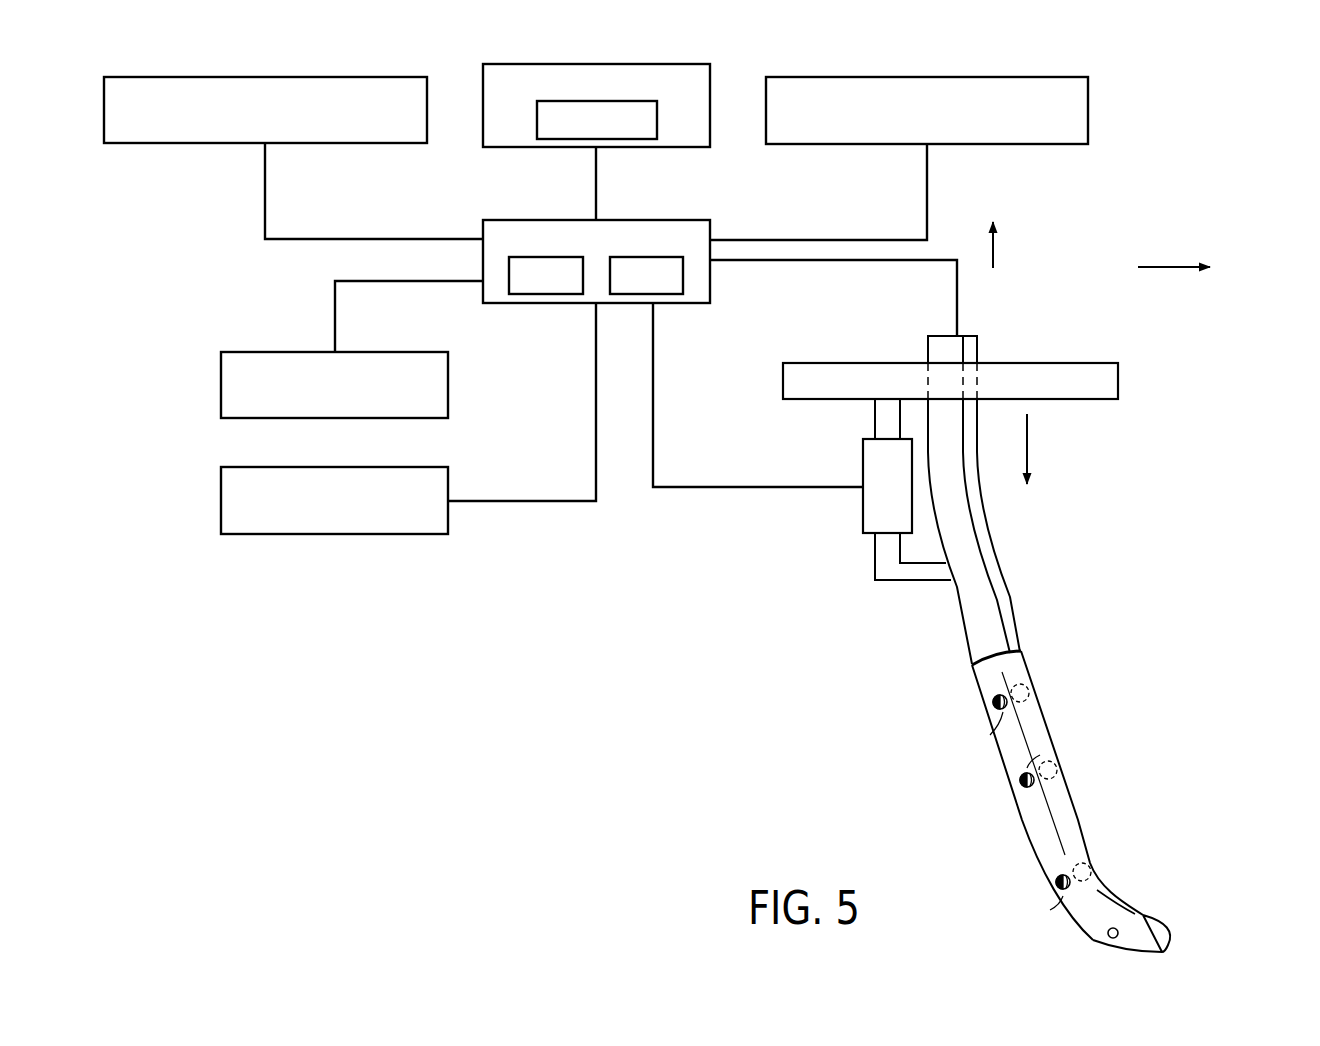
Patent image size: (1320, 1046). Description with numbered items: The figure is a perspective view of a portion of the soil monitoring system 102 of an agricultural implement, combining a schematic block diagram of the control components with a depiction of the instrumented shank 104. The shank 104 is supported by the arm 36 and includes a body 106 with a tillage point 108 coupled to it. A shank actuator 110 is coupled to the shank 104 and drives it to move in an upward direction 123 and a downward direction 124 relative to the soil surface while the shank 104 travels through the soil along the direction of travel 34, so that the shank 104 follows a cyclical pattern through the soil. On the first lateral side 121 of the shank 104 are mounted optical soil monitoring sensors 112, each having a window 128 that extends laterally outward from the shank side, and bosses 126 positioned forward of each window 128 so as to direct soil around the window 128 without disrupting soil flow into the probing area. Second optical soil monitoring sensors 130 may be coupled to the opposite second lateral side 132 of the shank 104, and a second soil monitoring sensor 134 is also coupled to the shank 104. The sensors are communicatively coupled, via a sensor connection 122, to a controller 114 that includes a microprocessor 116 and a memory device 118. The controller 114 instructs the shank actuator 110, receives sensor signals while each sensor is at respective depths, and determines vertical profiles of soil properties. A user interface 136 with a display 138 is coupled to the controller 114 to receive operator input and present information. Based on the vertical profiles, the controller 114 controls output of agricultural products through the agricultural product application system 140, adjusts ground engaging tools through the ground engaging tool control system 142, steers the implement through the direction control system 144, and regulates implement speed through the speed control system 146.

The ground engaging tool control system 142 is at (265, 76).
The user interface 136 is at (712, 103).
The display 138 is at (657, 118).
The agricultural product application system 140 is at (927, 77).
The controller 114 is at (541, 218).
The microprocessor 116 is at (547, 296).
The memory device 118 is at (670, 296).
The speed control system 146 is at (277, 352).
The direction control system 144 is at (277, 467).
The sensor connection 122 is at (832, 262).
The soil monitoring system 102 is at (960, 200).
The upward direction 123 is at (993, 250).
The direction of travel 34 is at (1165, 264).
The arm 36 is at (1047, 363).
The downward direction 124 is at (1030, 442).
The shank actuator 110 is at (862, 508).
The shank 104 is at (1080, 678).
The body 106 is at (1000, 603).
The first lateral side 121 is at (1010, 740).
The second lateral side 132 is at (1087, 826).
The tillage point 108 is at (1168, 952).
The second soil monitoring sensor 134 is at (1105, 936).
The optical soil monitoring sensor 112 is at (977, 690).
The window 128 is at (995, 703).
The second optical soil monitoring sensor 130 is at (1030, 688).
The boss 126 is at (1003, 712).